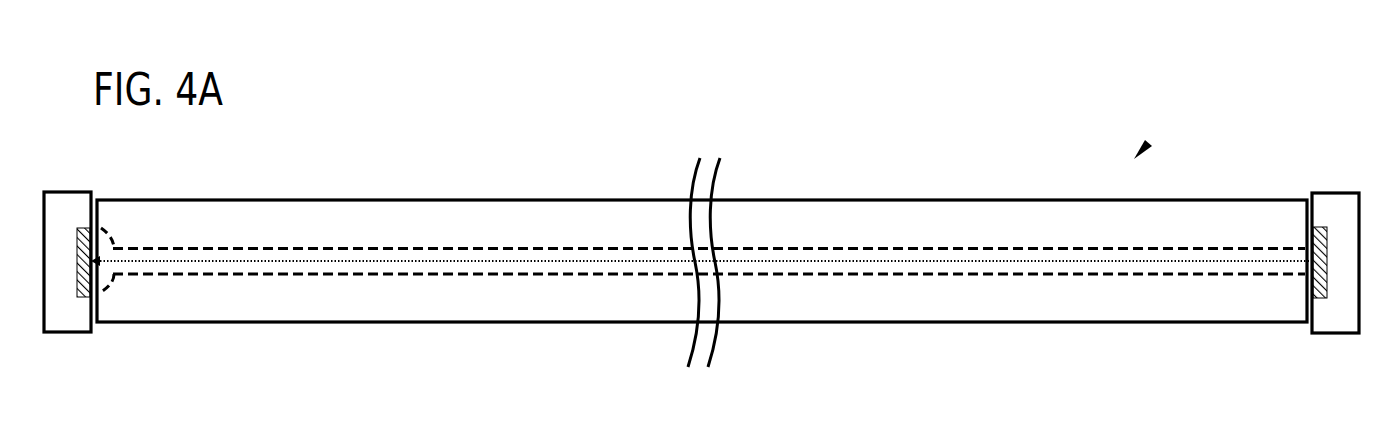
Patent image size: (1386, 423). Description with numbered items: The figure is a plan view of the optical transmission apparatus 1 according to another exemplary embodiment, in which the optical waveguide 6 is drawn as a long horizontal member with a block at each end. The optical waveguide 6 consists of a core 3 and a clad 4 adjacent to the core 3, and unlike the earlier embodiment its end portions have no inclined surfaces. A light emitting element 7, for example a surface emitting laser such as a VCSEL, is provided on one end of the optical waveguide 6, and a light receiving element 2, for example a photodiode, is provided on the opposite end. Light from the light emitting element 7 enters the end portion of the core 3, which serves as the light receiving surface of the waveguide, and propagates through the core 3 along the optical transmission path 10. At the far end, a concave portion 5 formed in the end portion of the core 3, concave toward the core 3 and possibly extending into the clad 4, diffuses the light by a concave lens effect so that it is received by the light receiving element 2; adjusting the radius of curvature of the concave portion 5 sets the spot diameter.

The optical transmission apparatus 1 is at (798, 118).
The light receiving element 2 is at (60, 332).
The core 3 is at (456, 247).
The clad 4 is at (580, 200).
The concave portion 5 is at (107, 283).
The optical waveguide 6 is at (1143, 145).
The light emitting element 7 is at (1332, 333).
The optical transmission path 10 is at (888, 262).